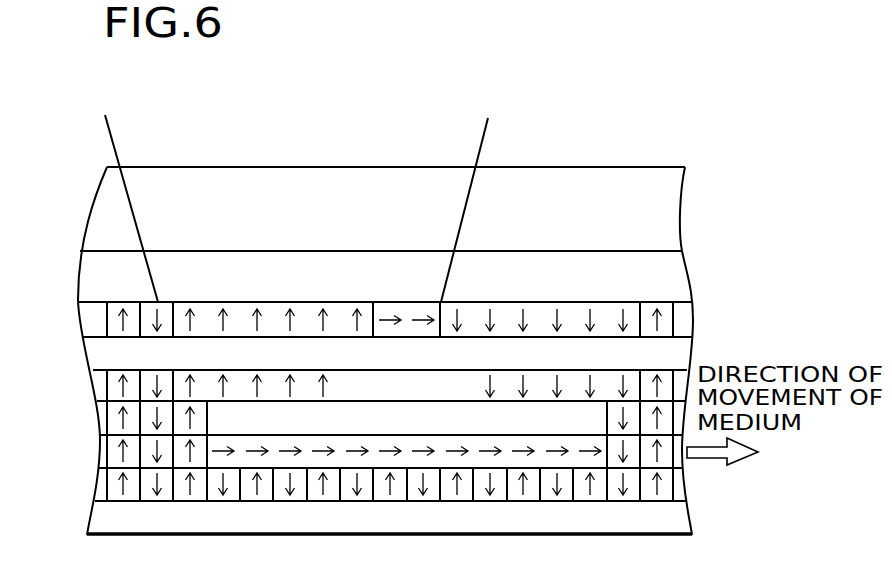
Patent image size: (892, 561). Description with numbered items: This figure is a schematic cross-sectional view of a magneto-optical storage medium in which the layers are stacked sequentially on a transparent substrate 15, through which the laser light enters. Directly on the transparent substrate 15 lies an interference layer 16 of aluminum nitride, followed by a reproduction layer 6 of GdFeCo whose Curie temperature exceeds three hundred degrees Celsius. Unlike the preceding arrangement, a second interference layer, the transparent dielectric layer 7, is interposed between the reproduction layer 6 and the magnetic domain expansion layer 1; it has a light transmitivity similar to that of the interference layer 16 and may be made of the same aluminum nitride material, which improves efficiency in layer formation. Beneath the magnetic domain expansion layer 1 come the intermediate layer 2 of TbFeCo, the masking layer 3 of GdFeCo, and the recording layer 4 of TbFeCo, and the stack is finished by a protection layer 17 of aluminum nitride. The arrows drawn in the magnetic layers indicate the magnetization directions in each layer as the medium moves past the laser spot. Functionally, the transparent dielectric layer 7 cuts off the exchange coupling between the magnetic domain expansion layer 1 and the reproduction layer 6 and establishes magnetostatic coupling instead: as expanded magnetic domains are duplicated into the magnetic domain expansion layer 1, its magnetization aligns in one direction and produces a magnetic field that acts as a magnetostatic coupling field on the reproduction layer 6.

The magnetic domain expansion layer 1 is at (100, 383).
The intermediate layer 2 is at (102, 412).
The masking layer 3 is at (103, 446).
The recording layer 4 is at (100, 483).
The reproduction layer 6 is at (93, 315).
The transparent dielectric layer 7 is at (95, 350).
The transparent substrate 15 is at (670, 220).
The interference layer 16 is at (680, 277).
The protection layer 17 is at (677, 522).